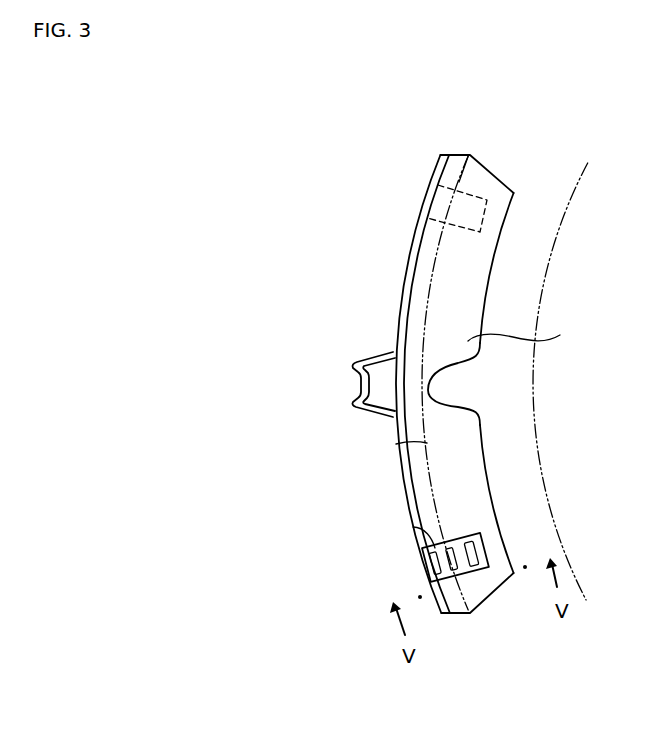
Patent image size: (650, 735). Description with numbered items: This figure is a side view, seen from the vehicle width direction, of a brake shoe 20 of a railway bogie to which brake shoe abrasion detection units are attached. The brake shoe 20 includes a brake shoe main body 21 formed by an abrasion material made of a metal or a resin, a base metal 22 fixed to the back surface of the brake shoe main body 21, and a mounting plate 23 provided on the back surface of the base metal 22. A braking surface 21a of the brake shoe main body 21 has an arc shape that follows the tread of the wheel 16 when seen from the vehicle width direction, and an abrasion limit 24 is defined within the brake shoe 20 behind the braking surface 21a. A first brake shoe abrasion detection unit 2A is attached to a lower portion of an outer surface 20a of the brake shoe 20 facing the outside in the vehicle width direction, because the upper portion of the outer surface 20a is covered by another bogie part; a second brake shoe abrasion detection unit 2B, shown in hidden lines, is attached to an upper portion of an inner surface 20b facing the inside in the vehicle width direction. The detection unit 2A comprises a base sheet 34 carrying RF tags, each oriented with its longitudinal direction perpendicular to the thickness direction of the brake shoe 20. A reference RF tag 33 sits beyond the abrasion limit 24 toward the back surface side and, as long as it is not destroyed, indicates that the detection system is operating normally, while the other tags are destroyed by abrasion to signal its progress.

The brake shoe 20 is at (406, 169).
The wheel 16 is at (568, 198).
The second brake shoe abrasion detection unit 2B is at (488, 209).
The inner surface 20b is at (478, 262).
The base metal 22 is at (406, 270).
The mounting plate 23 is at (352, 363).
The brake shoe main body 21 is at (560, 335).
The braking surface 21a is at (480, 425).
The abrasion limit 24 is at (395, 445).
The outer surface 20a is at (473, 493).
The first brake shoe abrasion detection unit 2A is at (484, 542).
The base sheet 34 is at (413, 527).
The reference RF tag 33 is at (379, 560).